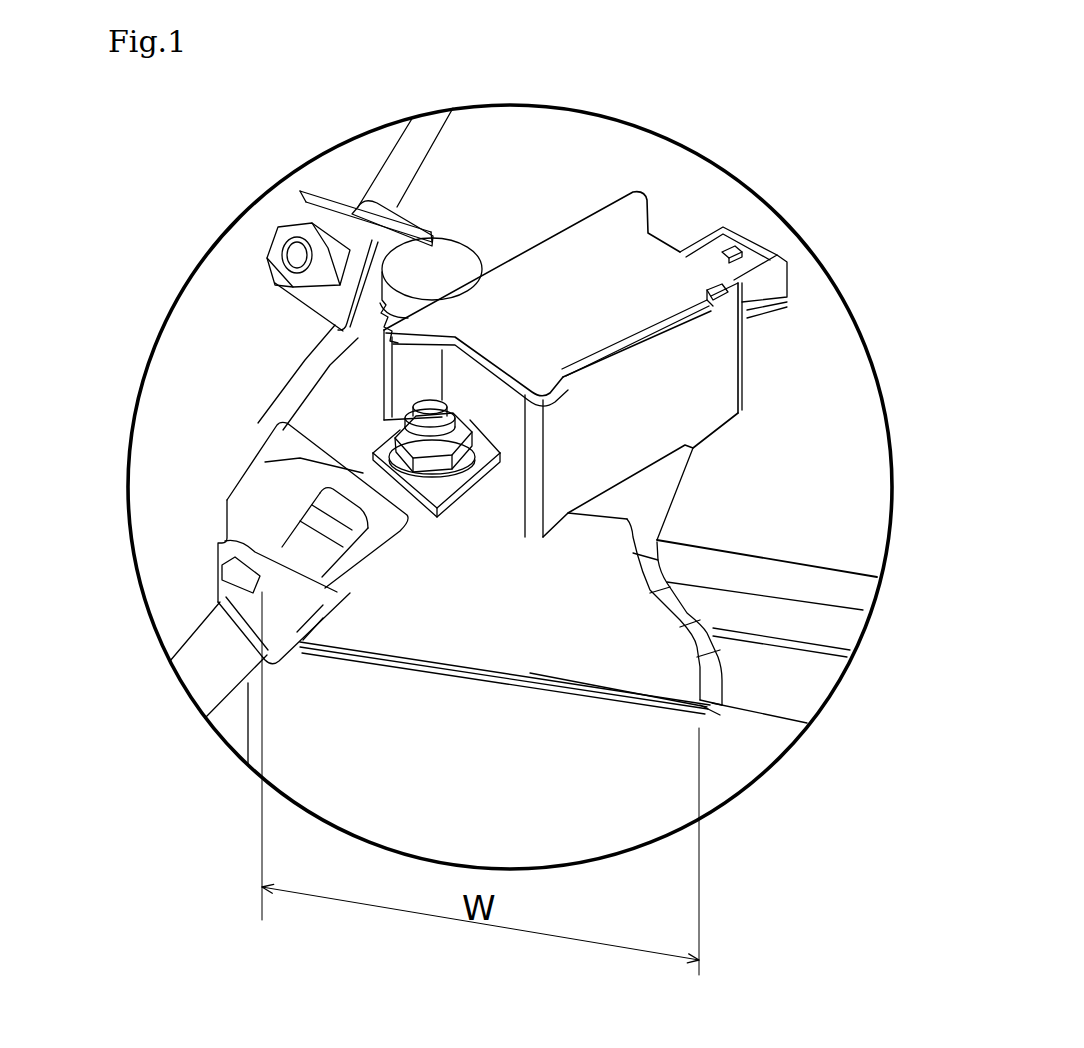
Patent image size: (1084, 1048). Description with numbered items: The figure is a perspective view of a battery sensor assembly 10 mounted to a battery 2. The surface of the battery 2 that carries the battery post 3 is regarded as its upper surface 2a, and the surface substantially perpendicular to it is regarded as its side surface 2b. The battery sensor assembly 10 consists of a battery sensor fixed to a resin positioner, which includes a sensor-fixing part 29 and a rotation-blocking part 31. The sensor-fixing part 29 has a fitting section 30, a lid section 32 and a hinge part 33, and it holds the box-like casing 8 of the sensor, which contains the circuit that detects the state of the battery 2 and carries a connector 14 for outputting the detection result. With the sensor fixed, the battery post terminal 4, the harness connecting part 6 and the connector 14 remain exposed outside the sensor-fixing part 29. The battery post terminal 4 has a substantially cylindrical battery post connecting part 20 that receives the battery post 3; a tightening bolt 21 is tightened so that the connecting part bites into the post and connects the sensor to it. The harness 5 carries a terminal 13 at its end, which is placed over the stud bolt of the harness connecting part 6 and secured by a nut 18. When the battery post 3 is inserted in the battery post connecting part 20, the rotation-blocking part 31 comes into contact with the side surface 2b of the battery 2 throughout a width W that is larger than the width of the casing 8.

The battery sensor assembly 10 is at (333, 163).
The sensor-fixing part 29 is at (588, 177).
The battery post terminal 4 is at (253, 233).
The tightening bolt 21 is at (280, 277).
The battery post 3 is at (448, 262).
The fitting section 30 is at (613, 340).
The lid section 32 is at (553, 262).
The connector 14 is at (745, 252).
The hinge part 33 is at (668, 350).
The casing 8 is at (472, 385).
The nut 18 is at (470, 418).
The battery post connecting part 20 is at (377, 318).
The terminal 13 is at (380, 450).
The harness 5 is at (183, 673).
The harness connecting part 6 is at (485, 634).
The rotation-blocking part 31 is at (517, 625).
The battery 2 is at (707, 652).
The upper surface 2a is at (795, 532).
The side surface 2b is at (760, 698).